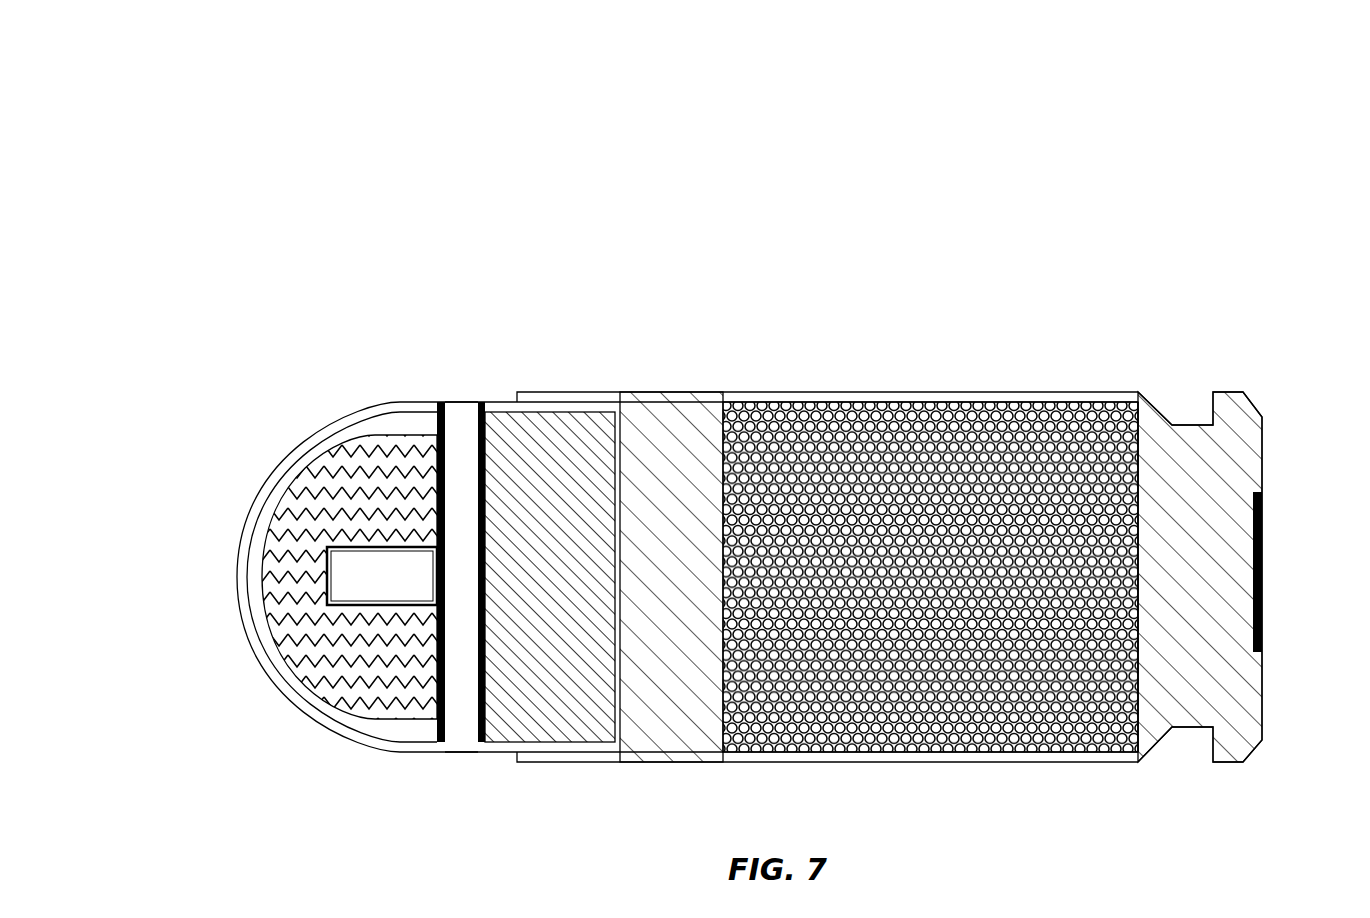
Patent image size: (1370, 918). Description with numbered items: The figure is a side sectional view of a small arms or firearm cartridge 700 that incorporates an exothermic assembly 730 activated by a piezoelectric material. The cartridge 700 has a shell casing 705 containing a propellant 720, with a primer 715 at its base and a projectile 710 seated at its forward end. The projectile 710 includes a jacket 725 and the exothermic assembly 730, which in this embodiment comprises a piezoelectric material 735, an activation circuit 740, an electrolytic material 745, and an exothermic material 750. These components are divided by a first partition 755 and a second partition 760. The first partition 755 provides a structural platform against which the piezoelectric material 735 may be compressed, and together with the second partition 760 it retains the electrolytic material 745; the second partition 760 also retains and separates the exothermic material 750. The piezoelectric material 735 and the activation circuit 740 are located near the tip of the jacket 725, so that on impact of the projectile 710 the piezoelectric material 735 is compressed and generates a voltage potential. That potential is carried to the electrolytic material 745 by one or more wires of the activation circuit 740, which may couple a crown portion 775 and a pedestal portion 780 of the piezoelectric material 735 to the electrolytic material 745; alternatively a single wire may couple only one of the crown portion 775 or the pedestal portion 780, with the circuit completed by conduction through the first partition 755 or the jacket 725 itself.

The cartridge 700 is at (585, 148).
The shell casing 705 is at (700, 404).
The projectile 710 is at (323, 373).
The primer 715 is at (1262, 568).
The propellant 720 is at (825, 410).
The jacket 725 is at (292, 448).
The exothermic assembly 730 is at (410, 737).
The piezoelectric material 735 is at (297, 522).
The activation circuit 740 is at (382, 576).
The electrolytic material 745 is at (458, 412).
The exothermic material 750 is at (592, 412).
The first partition 755 is at (437, 405).
The second partition 760 is at (484, 404).
The crown portion 775 is at (257, 583).
The pedestal portion 780 is at (457, 672).